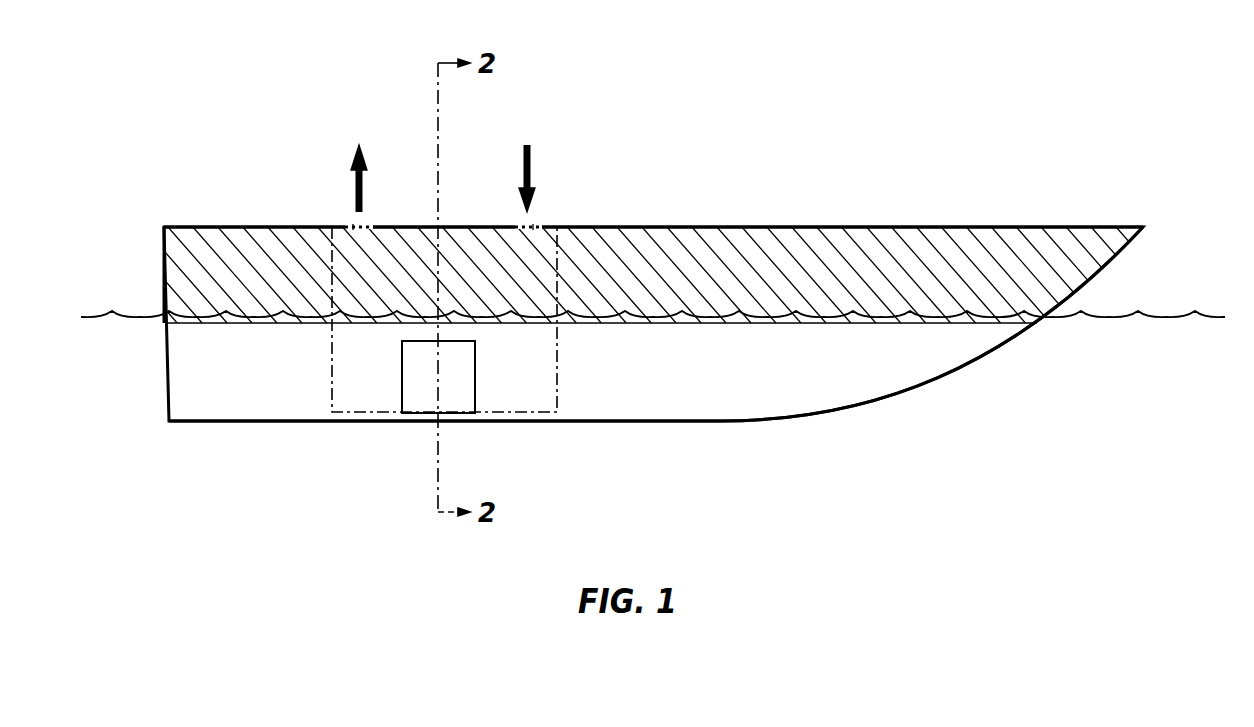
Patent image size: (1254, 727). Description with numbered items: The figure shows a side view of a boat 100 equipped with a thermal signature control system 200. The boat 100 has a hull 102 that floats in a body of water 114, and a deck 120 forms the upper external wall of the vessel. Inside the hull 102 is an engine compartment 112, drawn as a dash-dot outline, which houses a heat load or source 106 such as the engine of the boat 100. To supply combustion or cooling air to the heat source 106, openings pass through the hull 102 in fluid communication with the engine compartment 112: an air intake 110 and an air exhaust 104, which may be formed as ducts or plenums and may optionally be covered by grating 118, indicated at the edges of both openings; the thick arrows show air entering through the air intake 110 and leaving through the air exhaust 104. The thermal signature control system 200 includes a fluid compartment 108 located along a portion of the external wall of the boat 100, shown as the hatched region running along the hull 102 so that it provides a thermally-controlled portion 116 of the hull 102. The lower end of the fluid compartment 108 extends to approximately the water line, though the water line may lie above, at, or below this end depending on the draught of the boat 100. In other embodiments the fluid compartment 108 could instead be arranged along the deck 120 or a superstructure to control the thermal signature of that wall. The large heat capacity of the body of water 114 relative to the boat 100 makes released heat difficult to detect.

The boat 100 is at (953, 172).
The hull 102 is at (902, 392).
The air exhaust 104 is at (333, 224).
The heat load or source 106 is at (438, 377).
The fluid compartment 108 is at (213, 262).
The air intake 110 is at (517, 224).
The engine compartment 112 is at (444, 319).
The body of water 114 is at (653, 352).
The thermally-controlled portion of the hull 116 is at (713, 240).
The grating 118 is at (353, 224).
The deck 120 is at (878, 225).
The thermal signature control system 200 is at (785, 185).